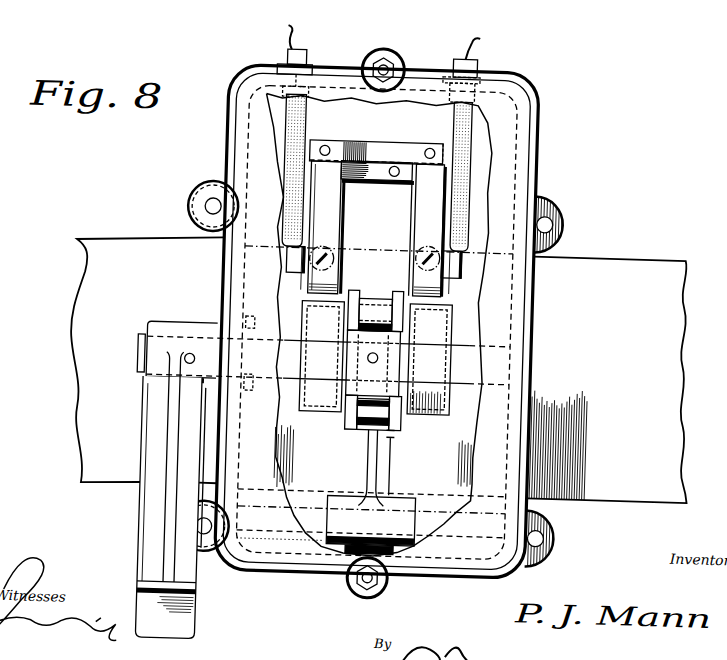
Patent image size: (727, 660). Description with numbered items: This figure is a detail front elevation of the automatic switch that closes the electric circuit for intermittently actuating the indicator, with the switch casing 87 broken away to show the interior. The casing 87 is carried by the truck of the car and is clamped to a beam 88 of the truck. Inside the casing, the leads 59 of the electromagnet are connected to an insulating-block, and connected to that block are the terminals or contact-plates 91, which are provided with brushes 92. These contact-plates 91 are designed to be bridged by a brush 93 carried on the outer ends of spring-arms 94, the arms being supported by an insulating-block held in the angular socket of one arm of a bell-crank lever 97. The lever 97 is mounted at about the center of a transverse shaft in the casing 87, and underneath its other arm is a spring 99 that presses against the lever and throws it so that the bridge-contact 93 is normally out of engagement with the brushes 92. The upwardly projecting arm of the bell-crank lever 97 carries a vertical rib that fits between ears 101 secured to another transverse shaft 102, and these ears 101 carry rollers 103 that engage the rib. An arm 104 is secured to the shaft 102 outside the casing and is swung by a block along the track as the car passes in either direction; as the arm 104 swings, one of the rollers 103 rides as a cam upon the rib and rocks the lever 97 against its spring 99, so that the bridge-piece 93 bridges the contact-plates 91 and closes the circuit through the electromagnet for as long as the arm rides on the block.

The leads 59 is at (283, 140).
The casing 87 is at (535, 173).
The beam 88 is at (579, 371).
The contact-plates 91 is at (413, 237).
The brushes 92 is at (302, 145).
The brush 93 is at (384, 144).
The spring-arms 94 is at (414, 212).
The bell-crank lever 97 is at (396, 467).
The spring 99 is at (371, 526).
The ears 101 is at (355, 415).
The transverse shaft 102 is at (143, 364).
The rollers 103 is at (379, 282).
The arm 104 is at (149, 545).